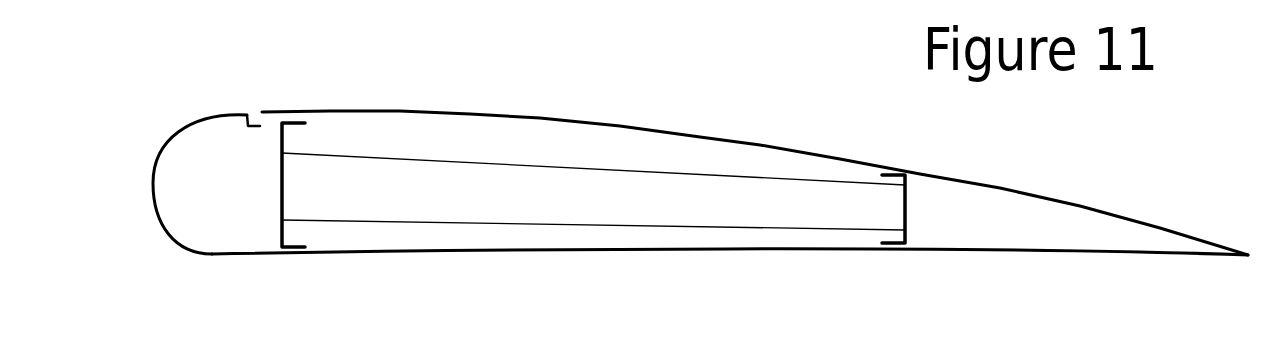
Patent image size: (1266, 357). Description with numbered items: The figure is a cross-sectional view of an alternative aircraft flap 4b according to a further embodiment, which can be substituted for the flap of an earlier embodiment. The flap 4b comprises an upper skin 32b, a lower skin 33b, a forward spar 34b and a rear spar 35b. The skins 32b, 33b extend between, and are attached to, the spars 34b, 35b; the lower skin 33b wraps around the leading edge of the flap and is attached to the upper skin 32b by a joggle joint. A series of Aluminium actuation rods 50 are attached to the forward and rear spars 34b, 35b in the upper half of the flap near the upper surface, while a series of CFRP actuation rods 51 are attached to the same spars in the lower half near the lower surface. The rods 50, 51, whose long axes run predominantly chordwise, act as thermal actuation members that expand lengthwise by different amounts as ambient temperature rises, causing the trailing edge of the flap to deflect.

The flap 4b is at (795, 118).
The upper skin 32b is at (642, 127).
The lower skin 33b is at (503, 251).
The forward spar 34b is at (282, 202).
The rear spar 35b is at (907, 213).
The Aluminium actuation rods 50 is at (466, 162).
The CFRP actuation rods 51 is at (618, 227).